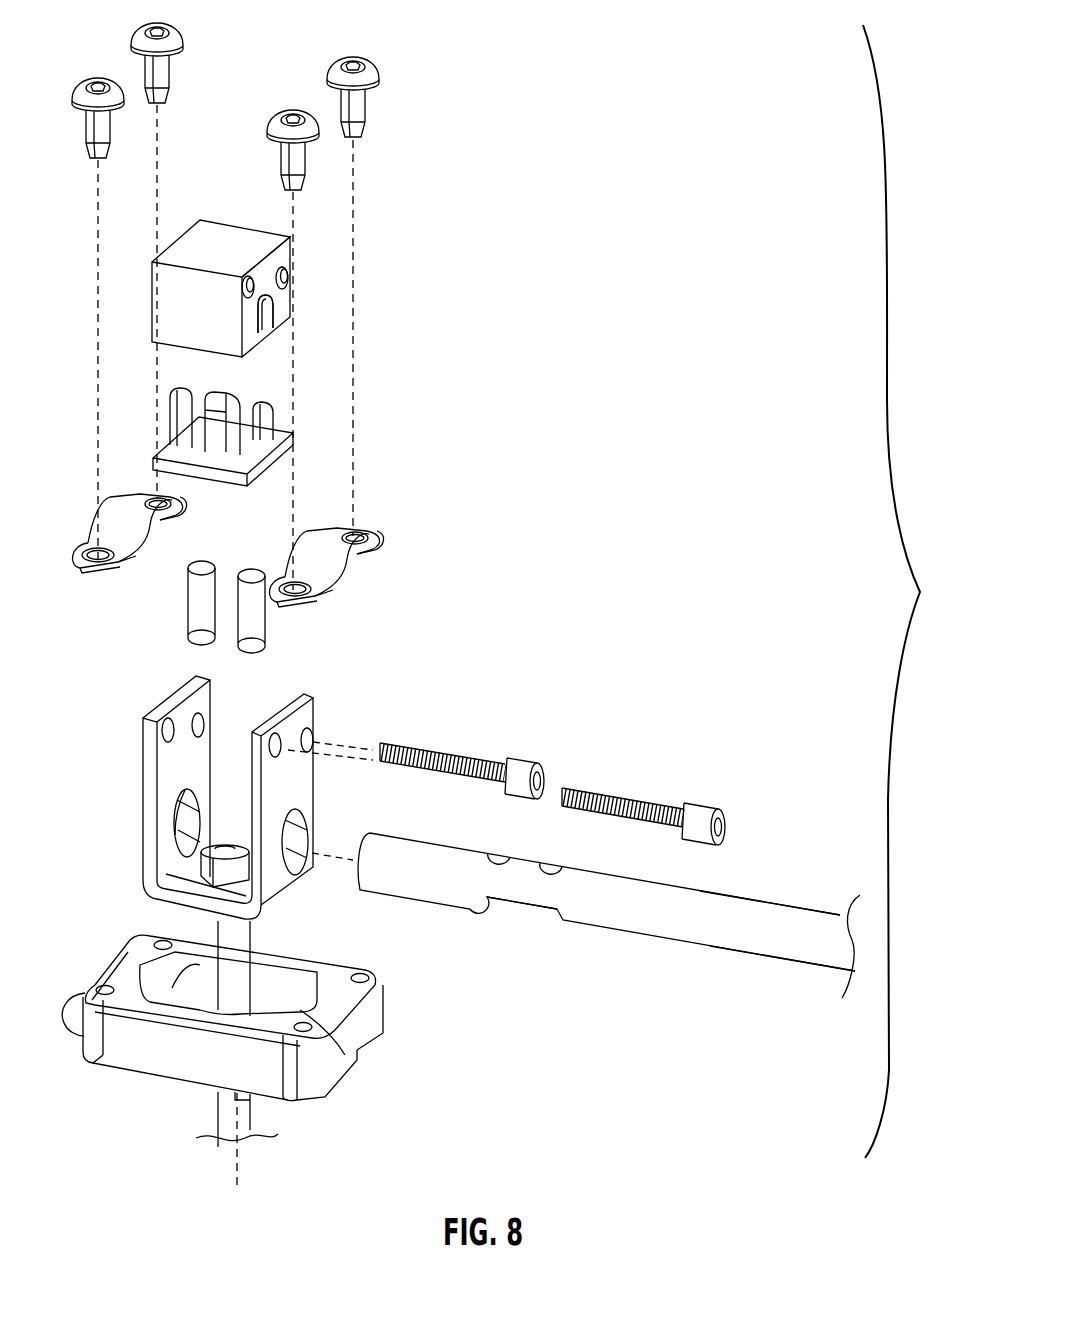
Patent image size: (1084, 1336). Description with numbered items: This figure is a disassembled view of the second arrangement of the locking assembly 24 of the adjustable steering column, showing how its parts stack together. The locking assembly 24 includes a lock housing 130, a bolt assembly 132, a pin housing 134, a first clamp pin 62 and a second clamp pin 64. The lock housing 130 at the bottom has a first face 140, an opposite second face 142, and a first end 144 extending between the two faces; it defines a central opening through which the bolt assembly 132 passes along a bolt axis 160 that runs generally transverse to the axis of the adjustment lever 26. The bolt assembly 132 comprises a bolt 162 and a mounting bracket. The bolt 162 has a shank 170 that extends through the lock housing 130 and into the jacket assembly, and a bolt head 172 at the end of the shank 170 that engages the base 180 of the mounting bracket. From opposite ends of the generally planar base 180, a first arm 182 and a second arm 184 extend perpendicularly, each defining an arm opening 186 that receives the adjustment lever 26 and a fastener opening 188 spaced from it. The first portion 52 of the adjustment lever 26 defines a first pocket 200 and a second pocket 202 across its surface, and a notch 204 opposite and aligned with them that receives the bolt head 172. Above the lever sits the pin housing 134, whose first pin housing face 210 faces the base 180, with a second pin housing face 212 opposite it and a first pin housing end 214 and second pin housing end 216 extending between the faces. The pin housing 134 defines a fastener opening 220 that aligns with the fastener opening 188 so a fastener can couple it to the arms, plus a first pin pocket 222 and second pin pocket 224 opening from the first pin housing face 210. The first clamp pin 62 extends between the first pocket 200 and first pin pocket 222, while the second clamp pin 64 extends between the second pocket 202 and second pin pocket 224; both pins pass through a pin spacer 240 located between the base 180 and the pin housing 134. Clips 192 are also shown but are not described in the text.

The locking assembly 24 is at (920, 592).
The adjustment lever 26 is at (787, 878).
The first portion 52 is at (655, 908).
The first clamp pin 62 is at (273, 621).
The second clamp pin 64 is at (181, 600).
The lock housing 130 is at (254, 1032).
The bolt assembly 132 is at (229, 797).
The pin housing 134 is at (189, 184).
The first face 140 is at (372, 977).
The second face 142 is at (70, 1000).
The first end 144 is at (375, 1014).
The bolt axis 160 is at (240, 1160).
The bolt 162 is at (263, 929).
The shank 170 is at (252, 1112).
The bolt head 172 is at (222, 850).
The base 180 is at (195, 887).
The first arm 182 is at (323, 768).
The second arm 184 is at (135, 757).
The arm opening 186 is at (185, 840).
The fastener opening 188 is at (203, 722).
The saddle clips 192 is at (93, 582).
The first pocket 200 is at (552, 864).
The second pocket 202 is at (500, 855).
The notch 204 is at (530, 916).
The first pin housing face 210 is at (257, 287).
The second pin housing face 212 is at (208, 238).
The first pin housing end 214 is at (280, 262).
The second pin housing end 216 is at (150, 290).
The fastener opening 220 is at (247, 282).
The first pin pocket 222 is at (274, 338).
The second pin pocket 224 is at (256, 348).
The pin spacer 240 is at (231, 490).